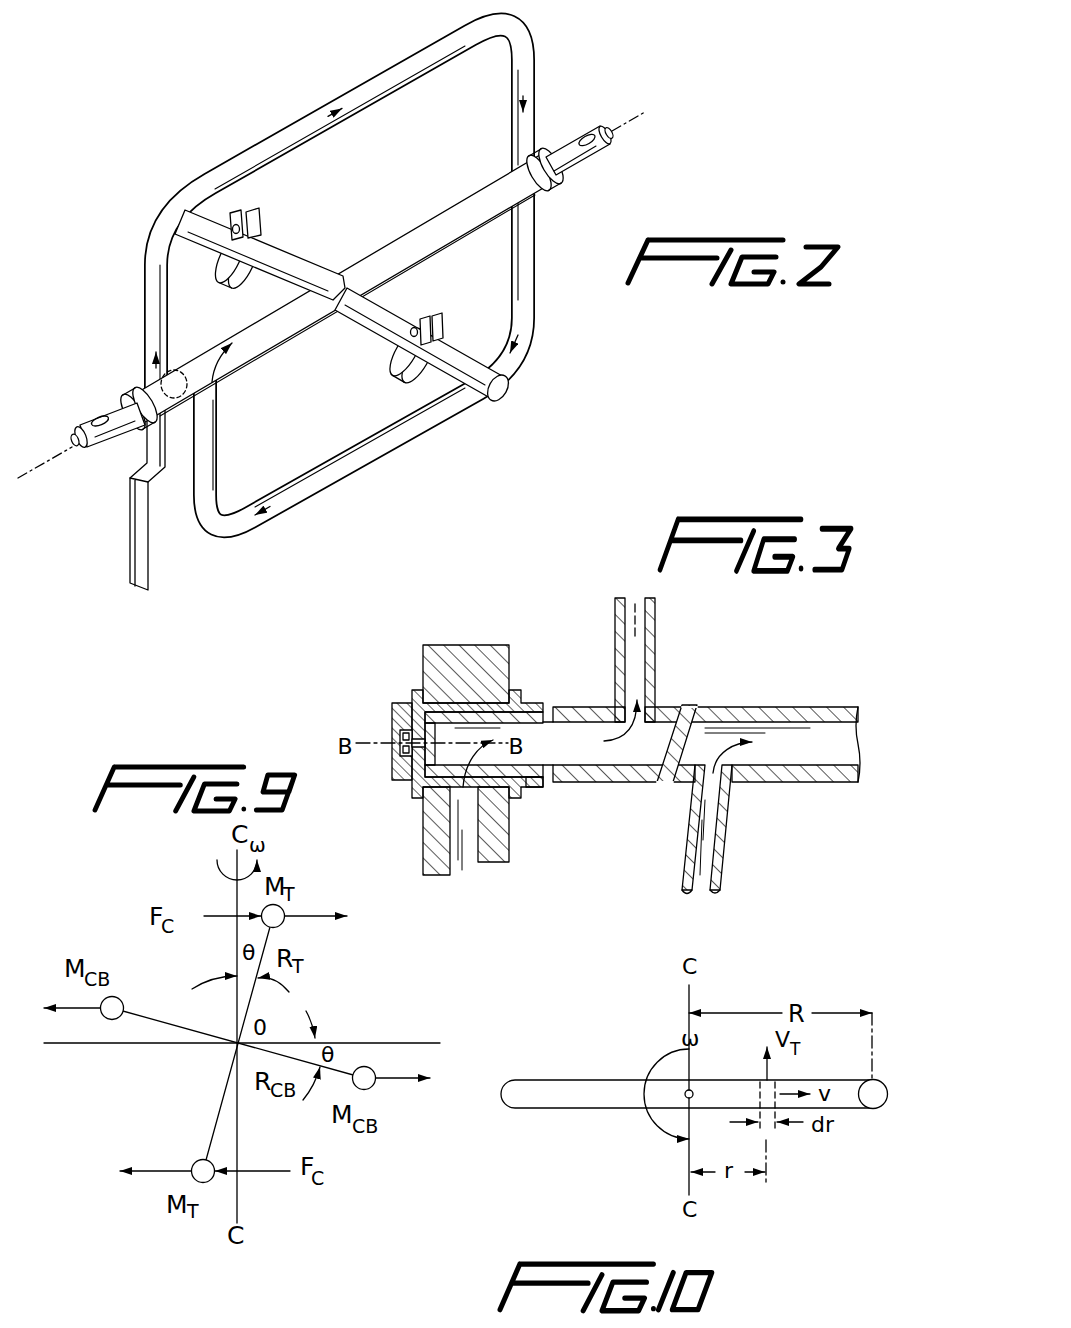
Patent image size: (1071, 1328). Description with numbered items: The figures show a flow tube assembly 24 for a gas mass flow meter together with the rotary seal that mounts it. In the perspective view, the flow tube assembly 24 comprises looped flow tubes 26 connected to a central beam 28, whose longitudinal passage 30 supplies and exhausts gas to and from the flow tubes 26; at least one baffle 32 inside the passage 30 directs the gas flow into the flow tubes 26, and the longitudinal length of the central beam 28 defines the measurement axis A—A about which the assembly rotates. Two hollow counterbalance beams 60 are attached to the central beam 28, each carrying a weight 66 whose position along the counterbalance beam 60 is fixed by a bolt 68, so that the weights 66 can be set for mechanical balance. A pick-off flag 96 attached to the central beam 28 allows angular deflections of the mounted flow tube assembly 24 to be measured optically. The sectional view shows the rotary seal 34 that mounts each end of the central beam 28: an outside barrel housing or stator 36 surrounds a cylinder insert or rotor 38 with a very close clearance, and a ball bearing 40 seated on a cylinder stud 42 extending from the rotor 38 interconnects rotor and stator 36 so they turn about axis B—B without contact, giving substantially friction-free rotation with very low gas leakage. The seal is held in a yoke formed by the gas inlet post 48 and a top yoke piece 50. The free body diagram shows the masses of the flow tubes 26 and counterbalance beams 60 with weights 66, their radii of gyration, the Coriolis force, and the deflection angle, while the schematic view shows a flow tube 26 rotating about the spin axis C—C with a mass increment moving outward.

In FIG. 2, the flow tube assembly 24 is at (550, 72).
In FIG. 2, the flow tube 26 is at (441, 55).
In FIG. 3, the flow tube 26 is at (656, 648).
In FIG. 10, the flow tube 26 is at (545, 1108).
In FIG. 2, the central beam 28 is at (452, 216).
In FIG. 3, the central beam 28 is at (745, 707).
In FIG. 3, the longitudinal passage 30 is at (548, 758).
In FIG. 2, the baffle 32 is at (180, 385).
In FIG. 3, the baffle 32 is at (672, 740).
In FIG. 3, the rotary seal 34 is at (465, 737).
In FIG. 3, the stator 36 is at (526, 701).
In FIG. 3, the rotor 38 is at (535, 779).
In FIG. 3, the ball bearing 40 is at (393, 722).
In FIG. 2, the cylinder stud 42 is at (603, 126).
In FIG. 3, the cylinder stud 42 is at (410, 786).
In FIG. 3, the gas inlet post 48 is at (423, 832).
In FIG. 3, the top yoke piece 50 is at (465, 655).
In FIG. 2, the counterbalance beam 60 is at (305, 268).
In FIG. 2, the weight 66 is at (267, 217).
In FIG. 2, the bolt 68 is at (216, 250).
In FIG. 2, the pick-off flag 96 is at (150, 565).